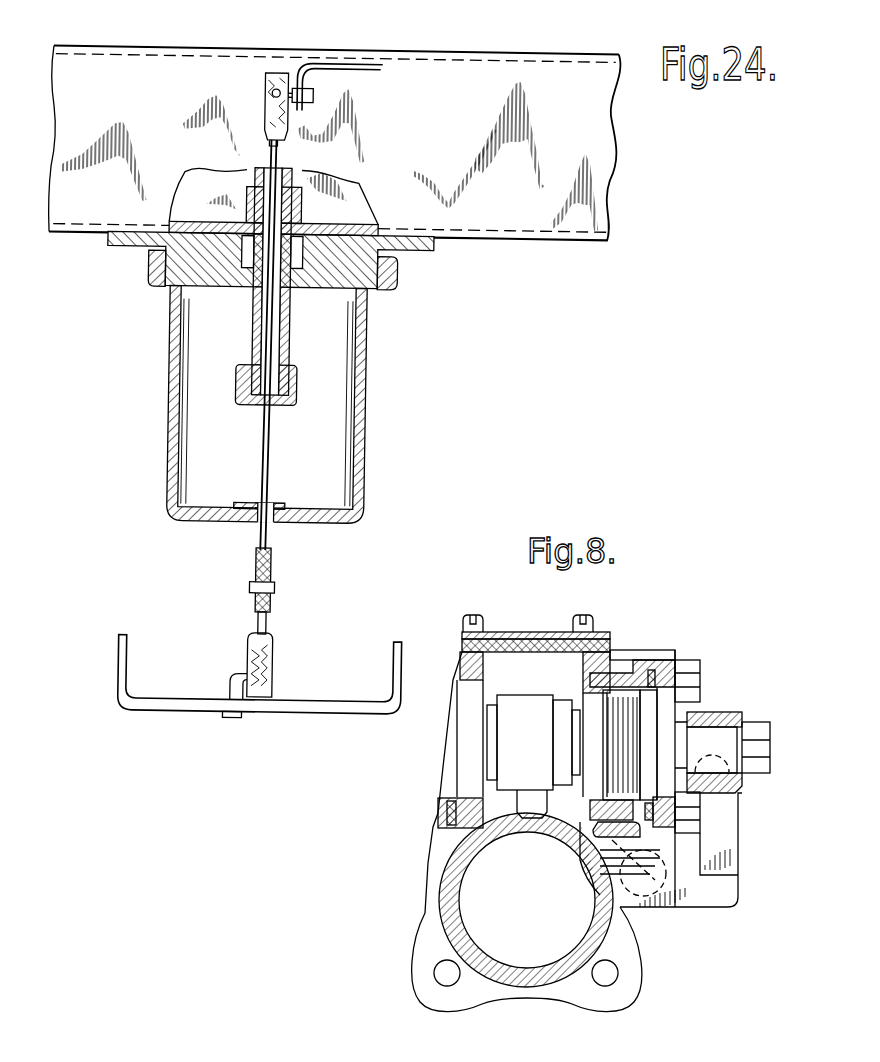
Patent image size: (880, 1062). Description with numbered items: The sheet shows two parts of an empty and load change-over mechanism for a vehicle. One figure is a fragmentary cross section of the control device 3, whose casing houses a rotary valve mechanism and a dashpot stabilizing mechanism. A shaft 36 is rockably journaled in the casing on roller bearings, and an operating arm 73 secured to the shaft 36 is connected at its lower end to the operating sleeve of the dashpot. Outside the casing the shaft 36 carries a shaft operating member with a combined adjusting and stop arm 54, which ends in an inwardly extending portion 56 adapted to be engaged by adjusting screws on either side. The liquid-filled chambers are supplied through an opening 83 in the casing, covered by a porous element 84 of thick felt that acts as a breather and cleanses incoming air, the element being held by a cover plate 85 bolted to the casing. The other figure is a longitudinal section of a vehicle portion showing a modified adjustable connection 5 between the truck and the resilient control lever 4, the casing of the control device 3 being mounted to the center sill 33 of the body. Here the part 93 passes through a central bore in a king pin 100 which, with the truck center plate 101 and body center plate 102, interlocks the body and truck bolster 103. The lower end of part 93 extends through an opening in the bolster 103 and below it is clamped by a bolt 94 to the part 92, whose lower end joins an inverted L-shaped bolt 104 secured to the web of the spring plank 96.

In FIG. 24, the center sill 33 is at (566, 226).
In FIG. 24, the truck center plate 101 is at (396, 272).
In FIG. 24, the body center plate 102 is at (158, 269).
In FIG. 24, the truck bolster 103 is at (364, 449).
In FIG. 24, the king pin 100 is at (256, 175).
In FIG. 24, the resilient control member or lever 4 is at (370, 78).
In FIG. 24, the adjustable connection 5 is at (260, 447).
In FIG. 24, the part of adjustable connection 93 is at (268, 473).
In FIG. 24, the bolt 94 is at (279, 590).
In FIG. 24, the part of adjustable connection 92 is at (271, 629).
In FIG. 24, the inverted L-shaped bolt 104 is at (242, 672).
In FIG. 24, the spring plank 96 is at (392, 655).
In FIG. 8, the opening 83 is at (497, 663).
In FIG. 8, the porous element 84 is at (530, 632).
In FIG. 8, the cover plate 85 is at (557, 632).
In FIG. 8, the control device 3 is at (667, 648).
In FIG. 8, the operating arm 73 is at (523, 708).
In FIG. 8, the shaft 36 is at (704, 733).
In FIG. 8, the combined adjusting and stop arm 54 is at (717, 833).
In FIG. 8, the inwardly extending portion 56 is at (700, 898).